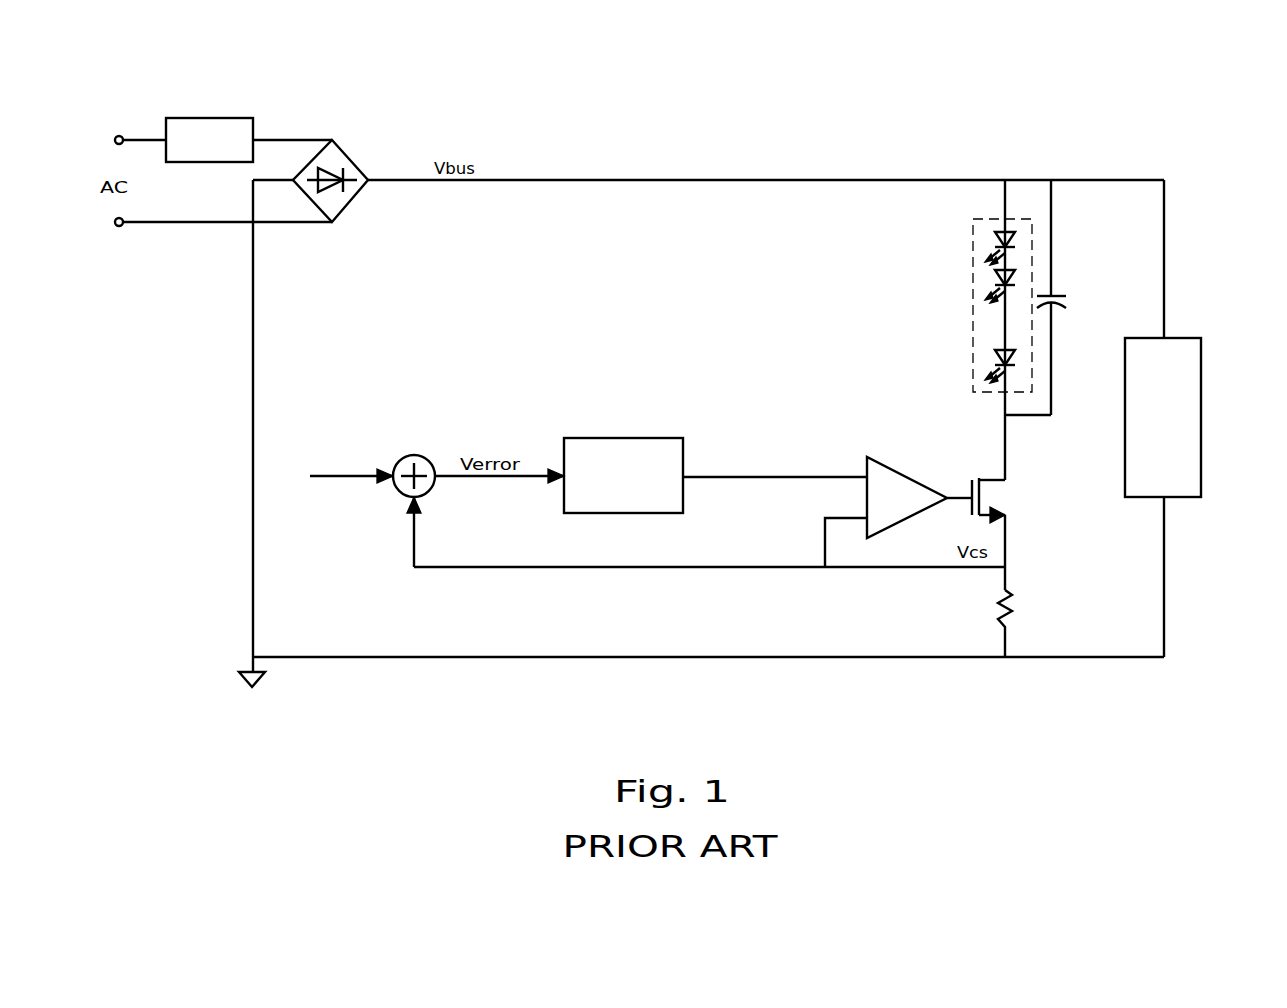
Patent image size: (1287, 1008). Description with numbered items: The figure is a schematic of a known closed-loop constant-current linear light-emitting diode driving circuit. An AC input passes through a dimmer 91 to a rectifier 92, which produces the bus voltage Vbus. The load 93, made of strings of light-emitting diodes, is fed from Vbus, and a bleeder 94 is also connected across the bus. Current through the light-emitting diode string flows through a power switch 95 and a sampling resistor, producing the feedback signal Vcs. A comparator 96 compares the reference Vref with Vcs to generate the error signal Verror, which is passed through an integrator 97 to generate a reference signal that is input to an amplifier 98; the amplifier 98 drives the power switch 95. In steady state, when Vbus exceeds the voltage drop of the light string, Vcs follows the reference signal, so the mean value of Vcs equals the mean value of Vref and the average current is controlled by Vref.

The dimmer 91 is at (196, 156).
The rectifier 92 is at (362, 168).
The load 93 is at (972, 242).
The bleeder 94 is at (1150, 427).
The power switch 95 is at (1012, 497).
The comparator 96 is at (400, 494).
The integrator 97 is at (610, 489).
The amplifier 98 is at (908, 518).